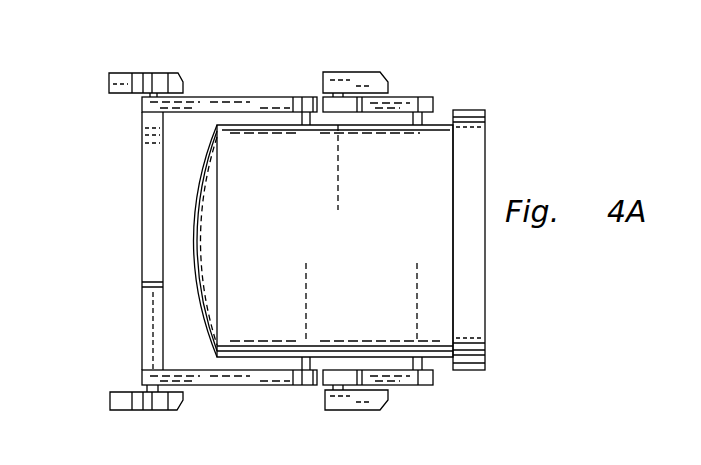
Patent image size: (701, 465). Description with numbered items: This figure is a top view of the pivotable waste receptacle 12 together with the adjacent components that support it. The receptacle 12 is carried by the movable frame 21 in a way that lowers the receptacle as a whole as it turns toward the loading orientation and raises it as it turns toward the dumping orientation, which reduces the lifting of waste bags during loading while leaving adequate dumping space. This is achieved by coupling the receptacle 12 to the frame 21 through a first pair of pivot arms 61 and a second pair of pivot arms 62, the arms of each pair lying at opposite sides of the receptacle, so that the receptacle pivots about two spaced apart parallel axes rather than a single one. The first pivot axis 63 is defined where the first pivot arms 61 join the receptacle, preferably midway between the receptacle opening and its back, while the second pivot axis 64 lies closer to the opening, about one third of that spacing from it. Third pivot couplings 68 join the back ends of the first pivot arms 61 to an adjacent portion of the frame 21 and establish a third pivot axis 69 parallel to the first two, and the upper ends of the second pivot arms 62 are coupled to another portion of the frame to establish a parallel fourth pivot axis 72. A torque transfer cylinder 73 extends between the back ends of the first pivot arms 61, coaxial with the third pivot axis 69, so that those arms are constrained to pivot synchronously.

The receptacle 12 is at (384, 241).
The movable frame 21 is at (182, 398).
The first pair of pivot arms 61 is at (258, 97).
The second pair of pivot arms 62 is at (410, 97).
The first pivot axis 63 is at (305, 305).
The second pivot axis 64 is at (416, 298).
The third pivot couplings 68 is at (148, 411).
The third pivot axis 69 is at (157, 318).
The fourth pivot axis 72 is at (336, 183).
The torque transfer cylinder 73 is at (142, 147).